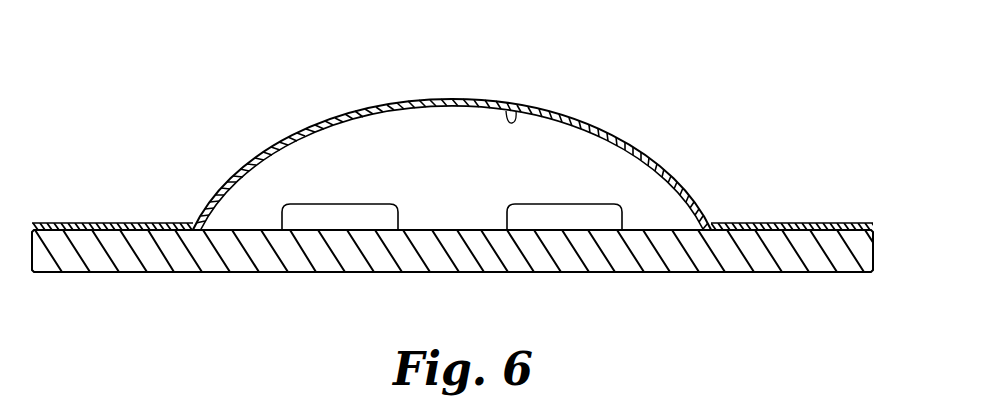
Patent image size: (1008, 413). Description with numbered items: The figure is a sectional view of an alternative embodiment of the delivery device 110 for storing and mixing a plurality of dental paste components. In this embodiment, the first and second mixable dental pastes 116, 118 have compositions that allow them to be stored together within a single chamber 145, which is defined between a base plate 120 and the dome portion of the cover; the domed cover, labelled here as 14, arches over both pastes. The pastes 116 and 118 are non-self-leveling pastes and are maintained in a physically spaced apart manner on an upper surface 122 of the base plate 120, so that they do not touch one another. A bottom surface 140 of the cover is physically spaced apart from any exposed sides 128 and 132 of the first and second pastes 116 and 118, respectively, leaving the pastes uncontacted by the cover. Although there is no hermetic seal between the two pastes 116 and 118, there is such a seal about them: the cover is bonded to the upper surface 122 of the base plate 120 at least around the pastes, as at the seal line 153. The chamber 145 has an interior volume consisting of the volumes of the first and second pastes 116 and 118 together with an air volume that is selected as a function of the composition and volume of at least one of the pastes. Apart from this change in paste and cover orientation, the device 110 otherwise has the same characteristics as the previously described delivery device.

The delivery device 110 is at (464, 127).
The dome lens 14 is at (410, 94).
The bottom surface 140 is at (516, 109).
The chamber 145 is at (478, 145).
The first mixable dental paste 116 is at (370, 197).
The second mixable dental paste 118 is at (548, 197).
The exposed sides 128 is at (350, 181).
The exposed sides 132 is at (561, 181).
The upper surface 122 is at (442, 229).
The base plate 120 is at (235, 274).
The seal line 153 is at (191, 224).